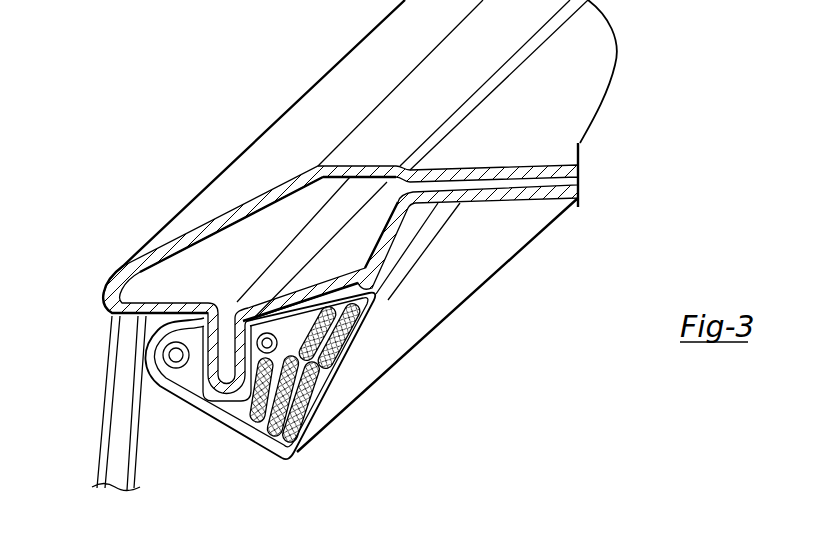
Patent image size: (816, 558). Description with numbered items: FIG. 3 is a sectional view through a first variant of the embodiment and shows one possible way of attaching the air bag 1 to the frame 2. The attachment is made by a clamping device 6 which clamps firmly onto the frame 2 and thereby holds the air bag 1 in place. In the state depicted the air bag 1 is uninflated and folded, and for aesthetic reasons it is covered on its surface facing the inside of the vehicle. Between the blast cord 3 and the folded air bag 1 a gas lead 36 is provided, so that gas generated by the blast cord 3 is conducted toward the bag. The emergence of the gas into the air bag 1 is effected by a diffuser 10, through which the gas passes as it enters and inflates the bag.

The air bag 1 is at (347, 335).
The frame 2 is at (328, 120).
The blast cord 3 is at (175, 355).
The clamping device 6 is at (160, 383).
The diffuser 10 is at (268, 354).
The gas lead 36 is at (215, 403).